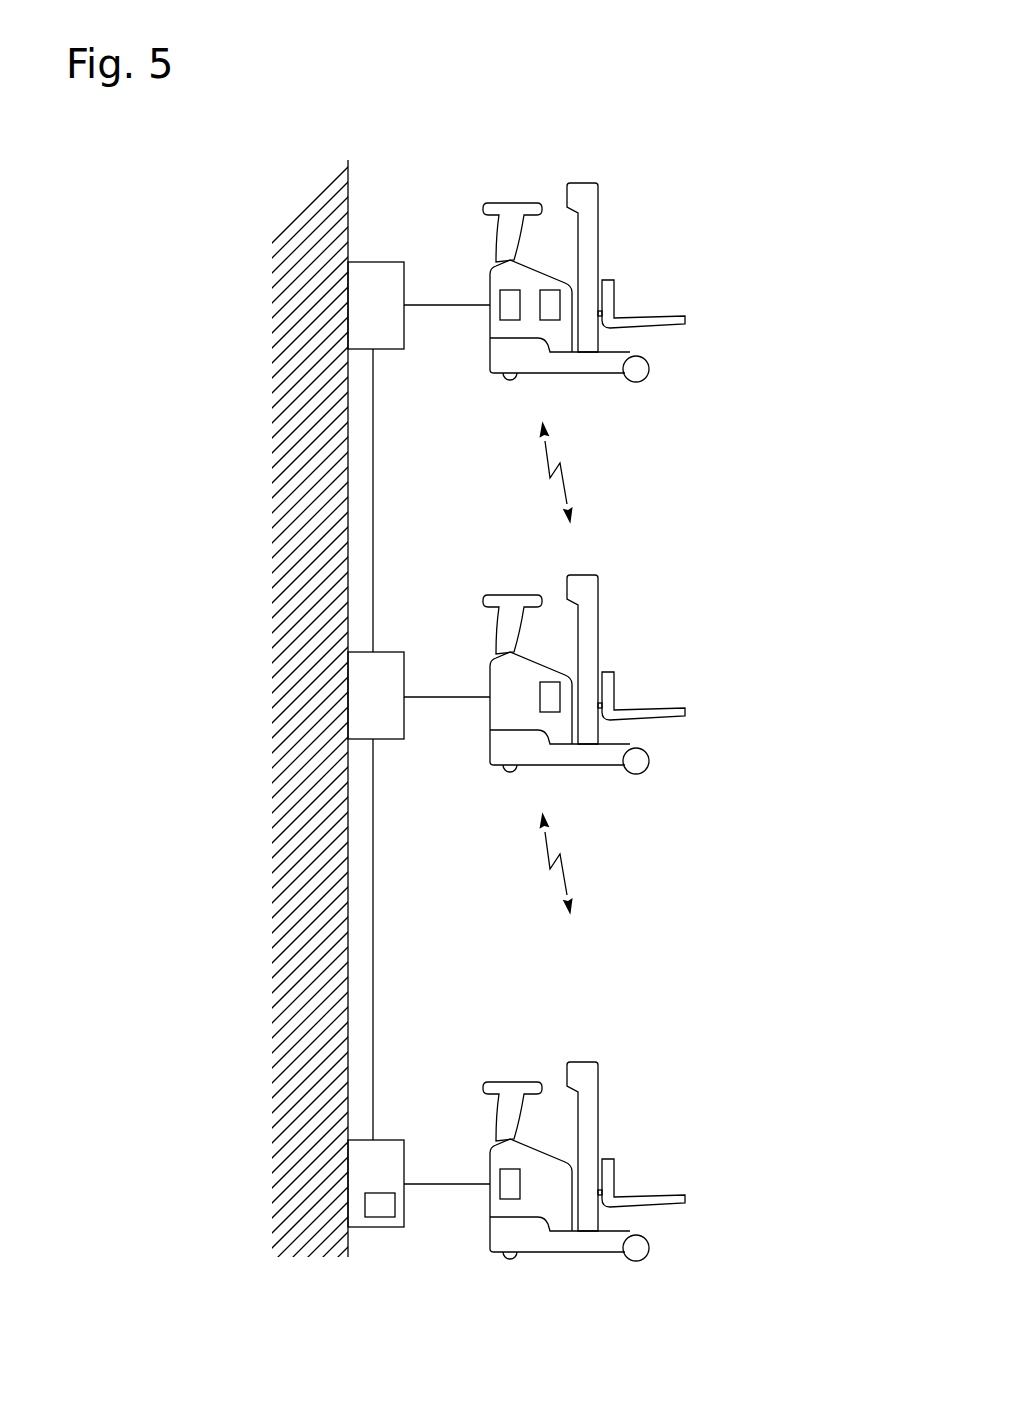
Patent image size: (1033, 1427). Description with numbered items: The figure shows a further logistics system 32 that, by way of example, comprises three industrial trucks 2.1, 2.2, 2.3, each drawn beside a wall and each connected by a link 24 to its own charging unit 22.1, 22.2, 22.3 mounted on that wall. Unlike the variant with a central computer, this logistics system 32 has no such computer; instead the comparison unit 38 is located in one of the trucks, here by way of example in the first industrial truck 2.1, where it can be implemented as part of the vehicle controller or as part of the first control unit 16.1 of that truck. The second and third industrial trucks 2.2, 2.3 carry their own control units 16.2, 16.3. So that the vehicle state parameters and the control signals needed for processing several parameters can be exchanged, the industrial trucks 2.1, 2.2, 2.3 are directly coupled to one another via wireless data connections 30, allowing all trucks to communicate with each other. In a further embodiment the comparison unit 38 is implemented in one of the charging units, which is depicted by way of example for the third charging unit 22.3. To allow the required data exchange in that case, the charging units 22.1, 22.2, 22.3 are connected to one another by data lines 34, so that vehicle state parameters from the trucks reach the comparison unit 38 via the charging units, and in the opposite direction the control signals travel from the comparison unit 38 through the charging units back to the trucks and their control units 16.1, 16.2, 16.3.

The logistics system 32 is at (738, 88).
The first industrial truck 2.1 is at (564, 743).
The second industrial truck 2.2 is at (628, 674).
The third industrial truck 2.3 is at (599, 1161).
The first control unit 16.1 is at (500, 299).
The second control unit 16.2 is at (550, 697).
The third control unit 16.3 is at (500, 1180).
The comparison unit 38 is at (550, 298).
The first charging unit 22.1 is at (399, 320).
The second charging unit 22.2 is at (399, 710).
The third charging unit 22.3 is at (392, 1153).
The charging connection 24 is at (450, 308).
The data lines 34 is at (374, 480).
The wireless data connections 30 is at (560, 470).